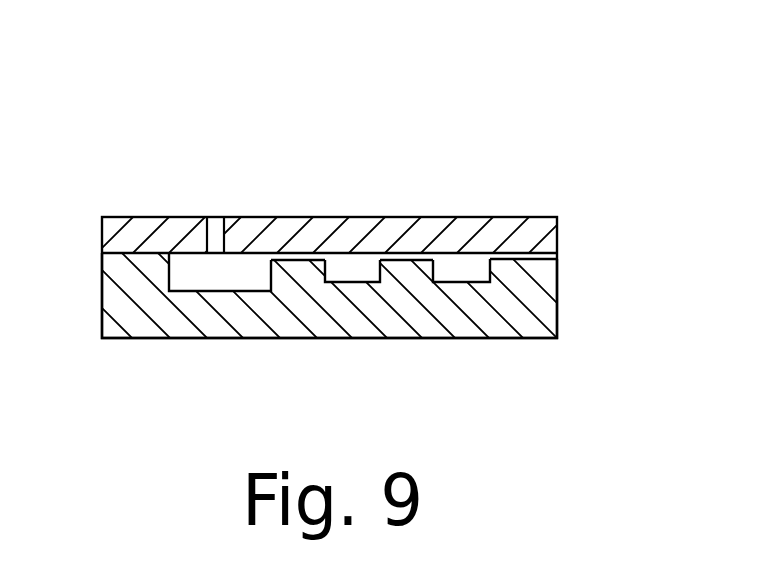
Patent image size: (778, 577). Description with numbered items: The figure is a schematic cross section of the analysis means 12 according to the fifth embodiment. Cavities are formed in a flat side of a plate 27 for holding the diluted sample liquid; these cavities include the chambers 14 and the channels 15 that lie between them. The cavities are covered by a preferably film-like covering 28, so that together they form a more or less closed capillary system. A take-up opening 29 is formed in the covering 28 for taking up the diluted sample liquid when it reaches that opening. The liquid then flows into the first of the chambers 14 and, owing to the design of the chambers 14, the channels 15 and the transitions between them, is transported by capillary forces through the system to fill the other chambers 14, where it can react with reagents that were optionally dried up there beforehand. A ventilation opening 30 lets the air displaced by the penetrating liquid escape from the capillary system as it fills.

The analysis means 12 is at (122, 162).
The chambers 14 is at (467, 270).
The channels 15 is at (298, 258).
The plate 27 is at (478, 310).
The covering 28 is at (489, 232).
The take-up opening 29 is at (214, 230).
The ventilation opening 30 is at (510, 259).